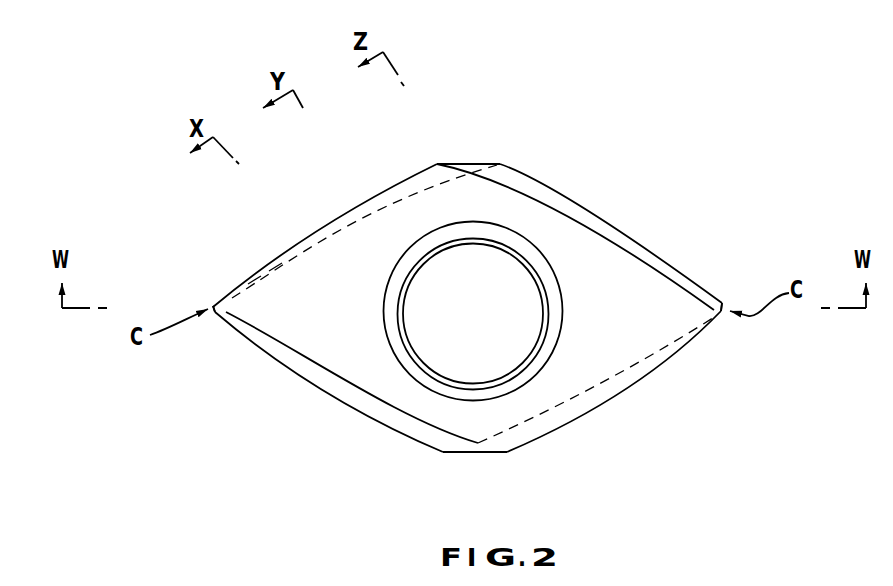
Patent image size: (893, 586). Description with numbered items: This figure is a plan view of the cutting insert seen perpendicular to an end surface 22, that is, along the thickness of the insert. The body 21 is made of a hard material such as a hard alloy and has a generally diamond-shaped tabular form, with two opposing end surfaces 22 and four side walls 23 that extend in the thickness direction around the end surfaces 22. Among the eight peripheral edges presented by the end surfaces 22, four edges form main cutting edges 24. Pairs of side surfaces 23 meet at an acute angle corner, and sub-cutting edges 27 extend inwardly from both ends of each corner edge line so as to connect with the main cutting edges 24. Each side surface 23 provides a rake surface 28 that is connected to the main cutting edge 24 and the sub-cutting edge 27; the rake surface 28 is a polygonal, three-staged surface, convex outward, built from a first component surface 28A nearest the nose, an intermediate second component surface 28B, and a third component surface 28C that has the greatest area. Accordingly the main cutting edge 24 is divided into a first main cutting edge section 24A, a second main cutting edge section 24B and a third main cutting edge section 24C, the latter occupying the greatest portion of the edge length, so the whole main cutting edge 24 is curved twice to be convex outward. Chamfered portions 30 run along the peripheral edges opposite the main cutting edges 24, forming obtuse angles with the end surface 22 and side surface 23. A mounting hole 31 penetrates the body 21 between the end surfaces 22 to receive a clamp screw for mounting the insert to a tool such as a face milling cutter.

The body 21 is at (560, 160).
The end surface 22 is at (510, 218).
The side wall 23 is at (397, 178).
The main cutting edge 24 is at (183, 182).
The first main cutting edge section 24A is at (232, 298).
The second main cutting edge section 24B is at (263, 270).
The third main cutting edge section 24C is at (327, 222).
The sub-cutting edge 27 is at (212, 306).
The rake surface 28 is at (305, 443).
The first component surface 28A is at (218, 318).
The second component surface 28B is at (250, 338).
The third component surface 28C is at (328, 380).
The chamfered portion 30 is at (243, 303).
The mounting hole 31 is at (543, 292).